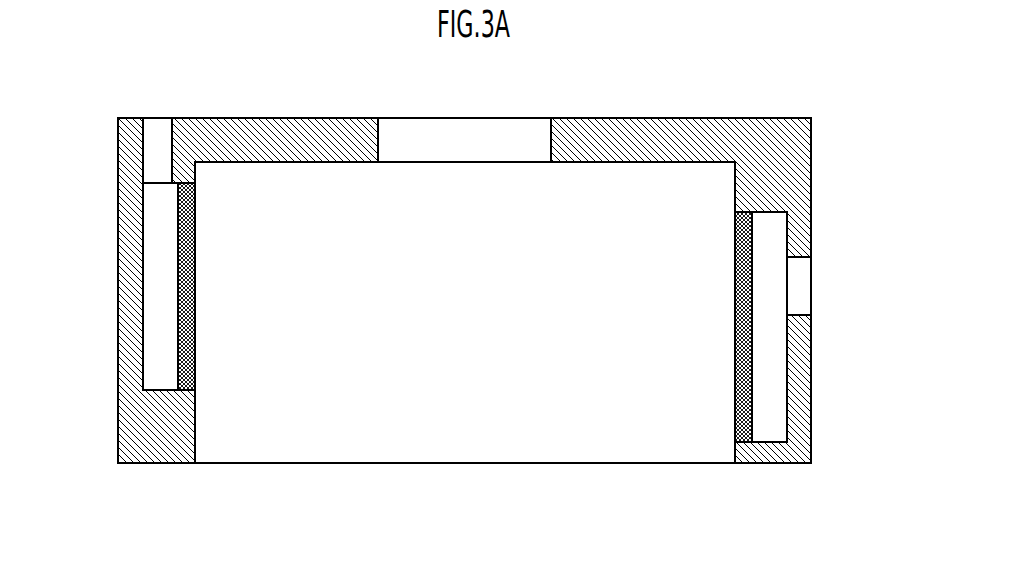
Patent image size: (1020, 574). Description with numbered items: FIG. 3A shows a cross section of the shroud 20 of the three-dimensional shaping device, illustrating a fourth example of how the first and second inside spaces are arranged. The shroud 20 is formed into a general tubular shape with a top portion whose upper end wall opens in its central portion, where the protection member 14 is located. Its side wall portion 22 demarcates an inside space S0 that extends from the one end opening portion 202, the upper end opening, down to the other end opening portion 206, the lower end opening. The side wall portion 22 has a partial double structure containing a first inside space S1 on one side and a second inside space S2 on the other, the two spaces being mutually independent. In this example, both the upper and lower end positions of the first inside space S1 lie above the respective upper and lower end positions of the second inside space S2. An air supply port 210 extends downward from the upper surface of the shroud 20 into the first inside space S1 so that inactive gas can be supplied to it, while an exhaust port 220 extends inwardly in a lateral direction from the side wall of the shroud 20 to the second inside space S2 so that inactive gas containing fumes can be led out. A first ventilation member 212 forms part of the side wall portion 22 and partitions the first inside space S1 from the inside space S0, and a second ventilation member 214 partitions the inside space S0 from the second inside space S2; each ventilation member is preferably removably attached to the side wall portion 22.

The shroud 20 is at (828, 119).
The side wall portion 22 is at (808, 447).
The protection member 14 is at (484, 132).
The one end opening portion 202 is at (550, 148).
The other end opening portion 206 is at (665, 425).
The air supply port 210 is at (170, 147).
The first ventilation member 212 is at (178, 322).
The second ventilation member 214 is at (753, 331).
The exhaust port 220 is at (796, 312).
The inside space S0 is at (240, 402).
The first inside space S1 is at (165, 278).
The second inside space S2 is at (762, 367).